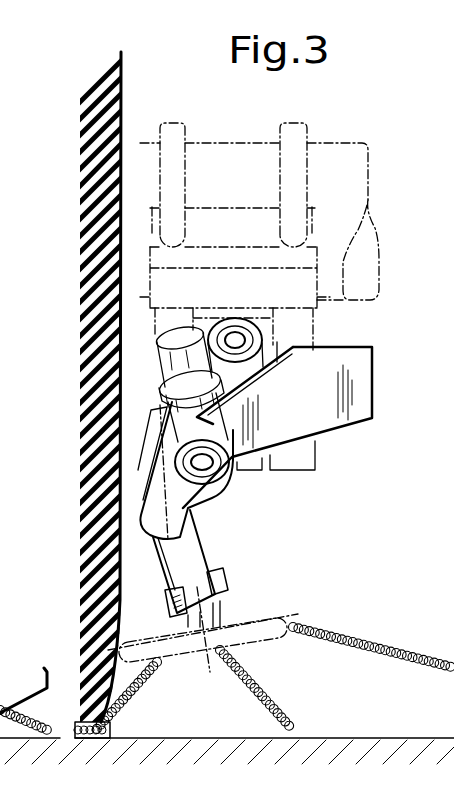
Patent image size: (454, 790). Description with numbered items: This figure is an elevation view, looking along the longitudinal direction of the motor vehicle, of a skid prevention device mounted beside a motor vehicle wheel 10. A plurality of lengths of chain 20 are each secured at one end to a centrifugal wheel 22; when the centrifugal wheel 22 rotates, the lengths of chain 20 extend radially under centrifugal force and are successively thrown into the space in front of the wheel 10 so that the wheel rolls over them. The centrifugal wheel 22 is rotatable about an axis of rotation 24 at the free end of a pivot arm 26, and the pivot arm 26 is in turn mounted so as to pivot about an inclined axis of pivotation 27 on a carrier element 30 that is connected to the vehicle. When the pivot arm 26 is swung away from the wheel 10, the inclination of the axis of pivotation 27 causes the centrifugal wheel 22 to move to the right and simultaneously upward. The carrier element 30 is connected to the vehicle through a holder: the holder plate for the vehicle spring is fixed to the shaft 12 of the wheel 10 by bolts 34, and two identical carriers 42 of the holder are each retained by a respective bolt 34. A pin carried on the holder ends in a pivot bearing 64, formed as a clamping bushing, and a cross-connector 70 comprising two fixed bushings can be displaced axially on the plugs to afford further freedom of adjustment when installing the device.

The motor vehicle wheel 10 is at (122, 65).
The shaft 12 is at (247, 162).
The bolts 34 is at (177, 133).
The cross-connector 70 is at (160, 353).
The carrier 42 is at (157, 415).
The pivot bearing 64 is at (255, 458).
The carrier element 30 is at (305, 408).
The axis of pivotation 27 is at (172, 542).
The pivot arm 26 is at (193, 568).
The centrifugal wheel 22 is at (280, 613).
The axis of rotation 24 is at (210, 665).
The lengths of chain 20 is at (388, 650).